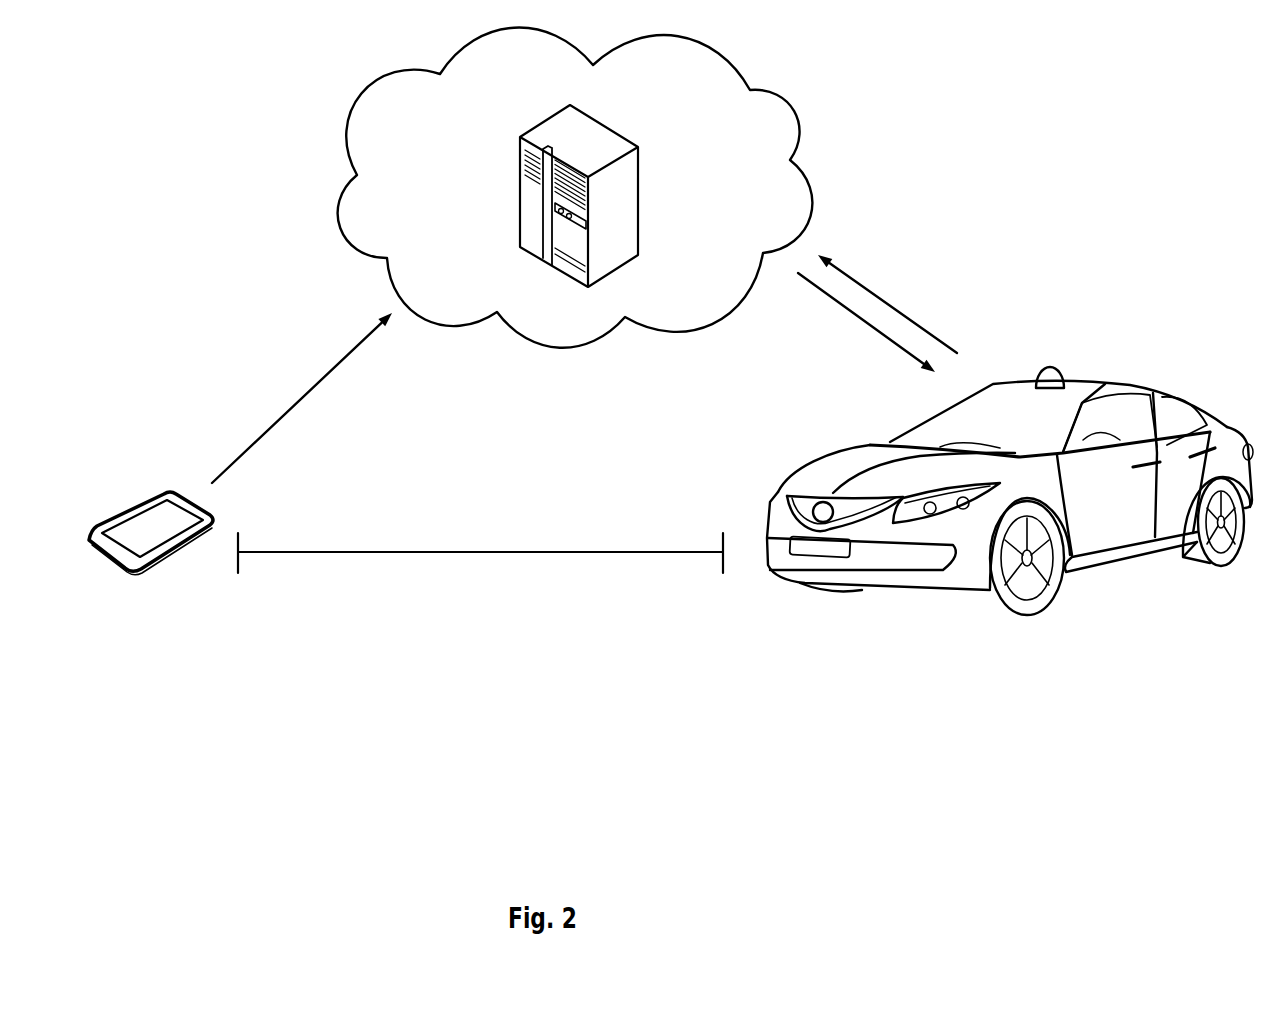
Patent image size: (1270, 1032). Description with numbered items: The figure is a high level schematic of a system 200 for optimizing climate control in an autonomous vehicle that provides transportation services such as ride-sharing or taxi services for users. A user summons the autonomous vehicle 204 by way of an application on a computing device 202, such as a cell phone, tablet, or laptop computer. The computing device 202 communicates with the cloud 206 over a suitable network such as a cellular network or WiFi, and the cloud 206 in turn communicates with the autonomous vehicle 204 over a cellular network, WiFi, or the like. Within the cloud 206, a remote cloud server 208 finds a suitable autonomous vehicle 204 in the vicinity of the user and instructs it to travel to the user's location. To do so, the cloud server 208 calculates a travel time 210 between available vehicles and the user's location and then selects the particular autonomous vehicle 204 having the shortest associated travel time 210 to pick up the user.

The system 200 is at (126, 70).
The computing device 202 is at (134, 522).
The autonomous vehicle 204 is at (1133, 512).
The cloud 206 is at (733, 194).
The cloud server 208 is at (527, 206).
The travel time 210 is at (484, 598).